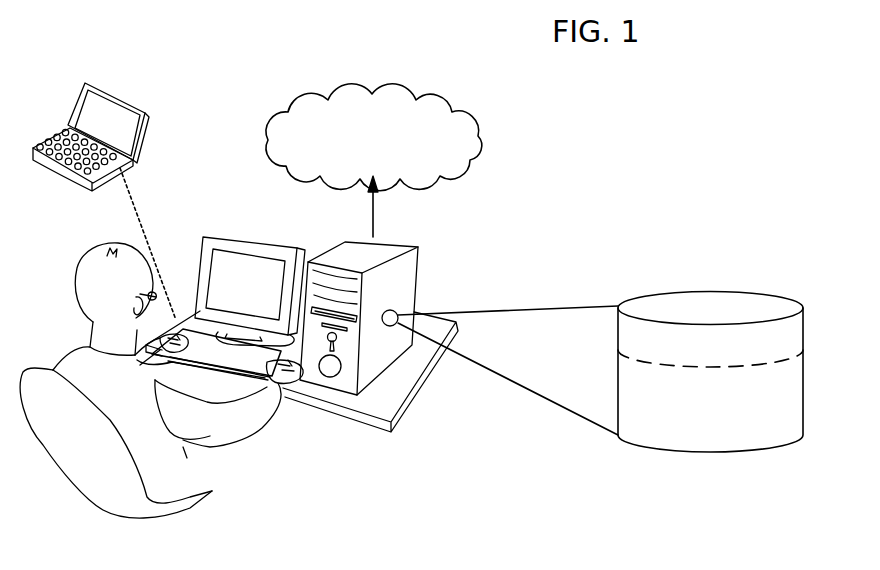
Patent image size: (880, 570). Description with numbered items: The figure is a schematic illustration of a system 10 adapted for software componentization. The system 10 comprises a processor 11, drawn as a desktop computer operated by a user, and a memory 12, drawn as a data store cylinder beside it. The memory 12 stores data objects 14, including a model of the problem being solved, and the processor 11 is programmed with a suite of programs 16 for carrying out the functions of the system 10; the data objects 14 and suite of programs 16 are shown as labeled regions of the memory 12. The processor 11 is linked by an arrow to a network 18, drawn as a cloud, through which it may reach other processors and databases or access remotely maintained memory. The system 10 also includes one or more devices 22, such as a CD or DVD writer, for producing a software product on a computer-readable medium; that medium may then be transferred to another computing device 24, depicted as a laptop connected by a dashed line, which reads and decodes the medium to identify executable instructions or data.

The system 10 is at (678, 166).
The processor 11 is at (347, 259).
The memory 12 is at (710, 292).
The data objects 14 is at (618, 331).
The suite of programs 16 is at (618, 385).
The network 18 is at (266, 142).
The devices 22 is at (345, 317).
The computing device 24 is at (74, 112).